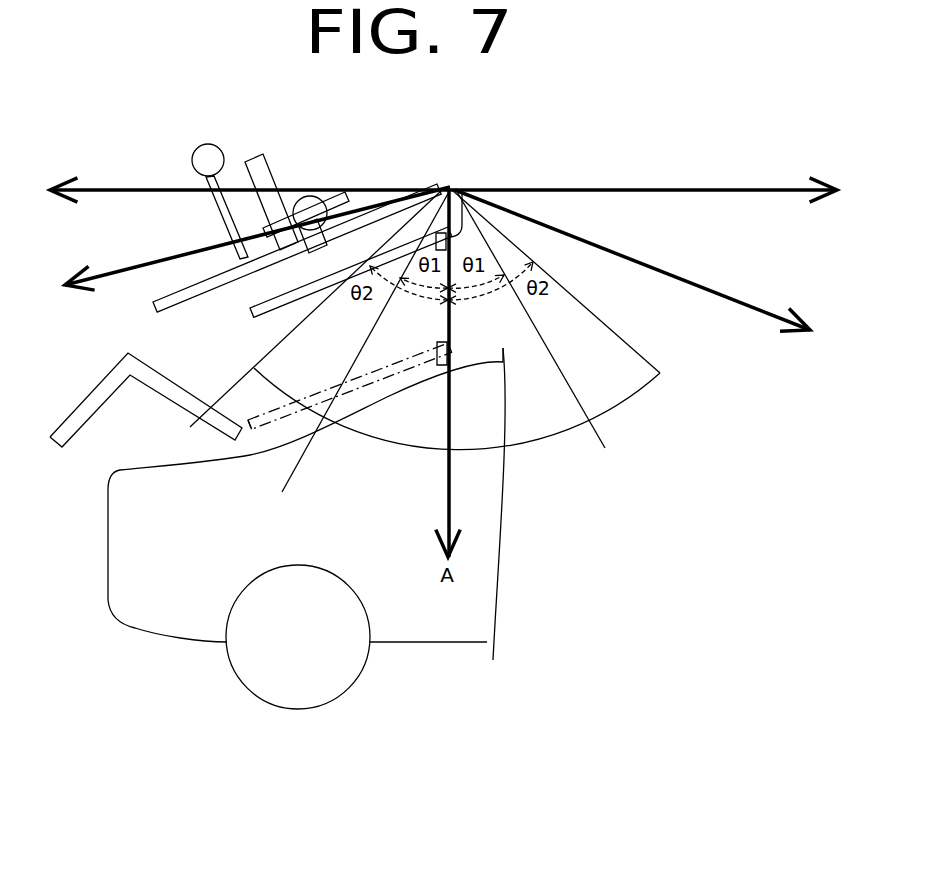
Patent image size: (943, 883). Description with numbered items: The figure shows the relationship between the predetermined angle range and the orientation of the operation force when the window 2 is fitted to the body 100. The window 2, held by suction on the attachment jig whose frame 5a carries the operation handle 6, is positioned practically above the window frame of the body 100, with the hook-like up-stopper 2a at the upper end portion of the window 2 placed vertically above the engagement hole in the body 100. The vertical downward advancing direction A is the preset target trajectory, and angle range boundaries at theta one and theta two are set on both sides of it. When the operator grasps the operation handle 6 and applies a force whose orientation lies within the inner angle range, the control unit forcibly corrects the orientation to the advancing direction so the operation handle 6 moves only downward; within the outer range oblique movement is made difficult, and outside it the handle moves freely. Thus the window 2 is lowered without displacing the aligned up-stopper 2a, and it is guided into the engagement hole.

The window 2 is at (306, 286).
The up-stopper 2a is at (463, 192).
The frame 5a is at (186, 290).
The operation handle 6 is at (337, 190).
The body 100 is at (157, 683).